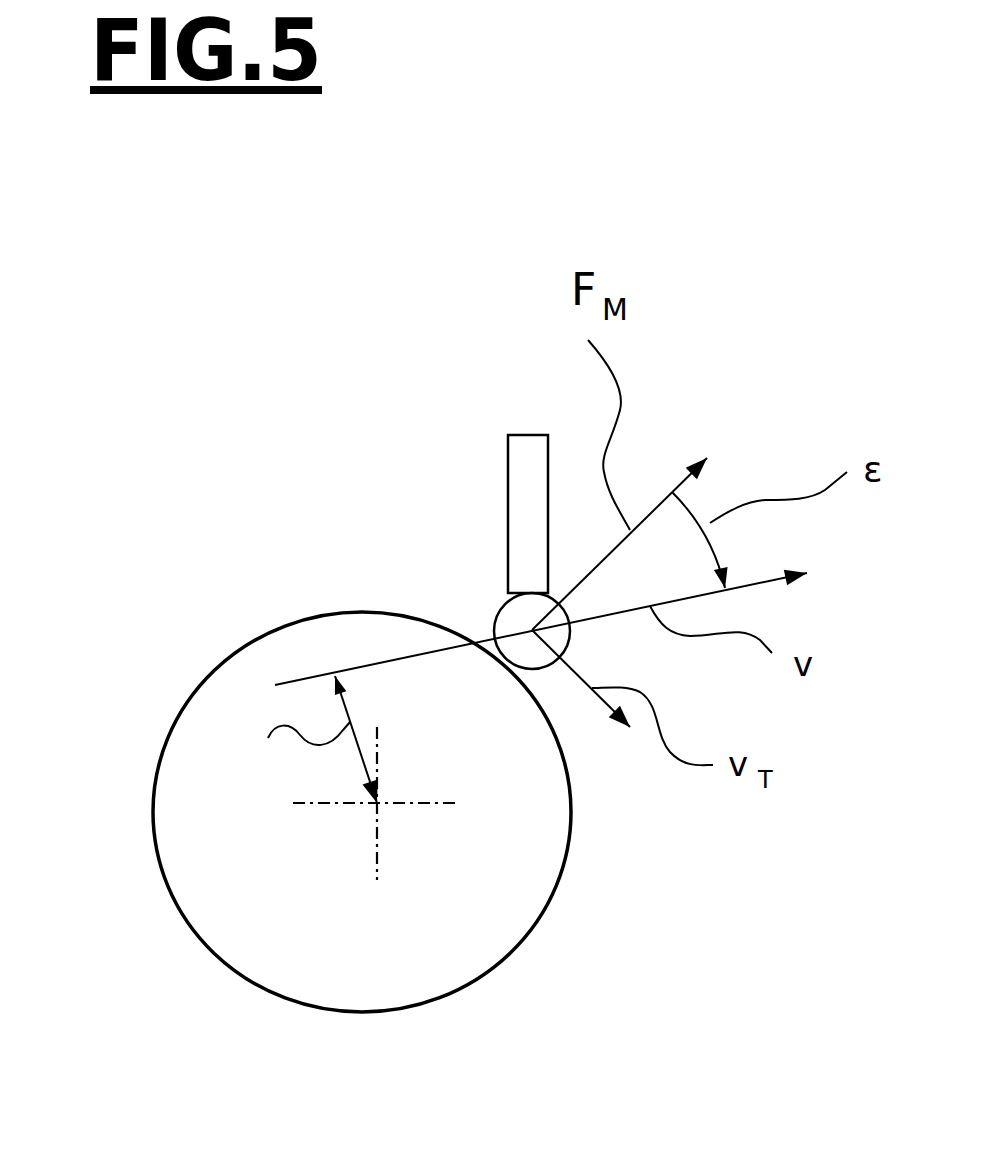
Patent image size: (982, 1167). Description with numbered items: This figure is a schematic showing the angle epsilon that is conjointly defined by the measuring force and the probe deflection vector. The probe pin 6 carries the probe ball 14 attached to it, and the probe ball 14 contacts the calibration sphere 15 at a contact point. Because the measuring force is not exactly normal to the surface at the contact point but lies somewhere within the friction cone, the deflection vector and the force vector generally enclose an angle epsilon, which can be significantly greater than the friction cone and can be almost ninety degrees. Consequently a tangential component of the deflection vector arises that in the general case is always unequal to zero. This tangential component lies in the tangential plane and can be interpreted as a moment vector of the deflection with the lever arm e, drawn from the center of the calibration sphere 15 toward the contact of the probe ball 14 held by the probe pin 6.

The magnet / pin 6 is at (535, 458).
The roller 14 is at (505, 620).
The wheel / disc 15 is at (180, 770).